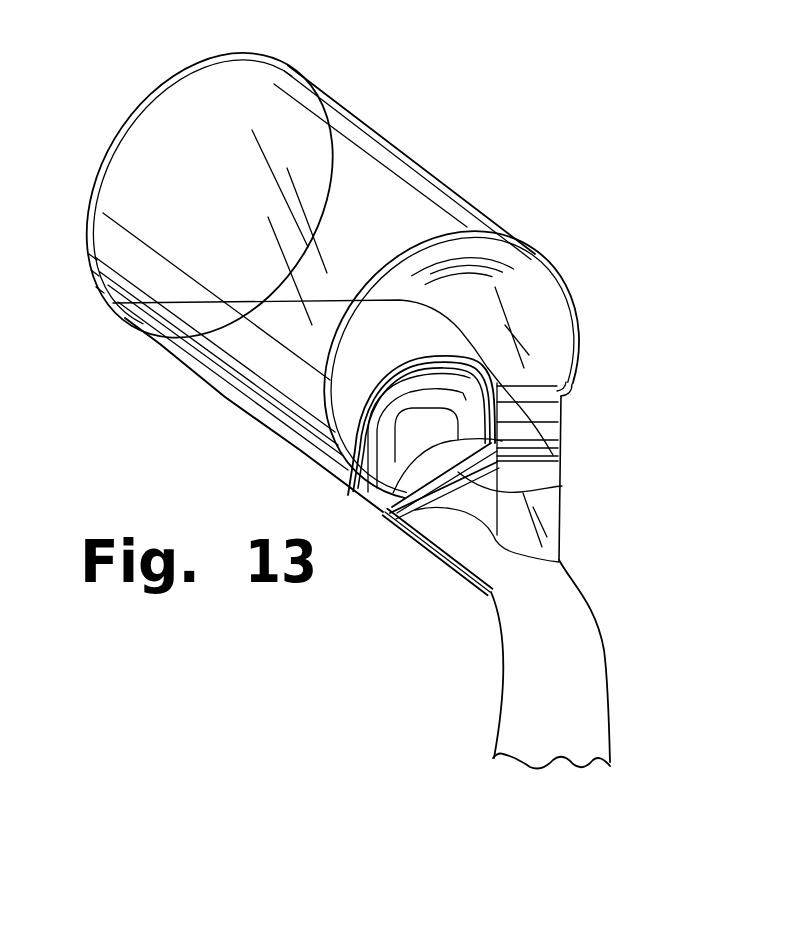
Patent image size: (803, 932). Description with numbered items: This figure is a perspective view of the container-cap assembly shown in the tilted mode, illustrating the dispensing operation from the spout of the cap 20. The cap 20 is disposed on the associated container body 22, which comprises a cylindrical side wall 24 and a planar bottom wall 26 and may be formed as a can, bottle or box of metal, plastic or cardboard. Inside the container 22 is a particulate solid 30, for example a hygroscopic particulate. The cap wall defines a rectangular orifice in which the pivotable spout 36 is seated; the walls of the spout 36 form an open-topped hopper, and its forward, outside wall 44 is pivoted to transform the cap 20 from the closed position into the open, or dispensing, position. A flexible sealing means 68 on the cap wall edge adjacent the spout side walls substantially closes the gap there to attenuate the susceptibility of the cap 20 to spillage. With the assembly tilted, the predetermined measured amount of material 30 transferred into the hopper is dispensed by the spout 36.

The cap 20 is at (595, 284).
The container body 22 is at (118, 362).
The cylindrical side wall 24 is at (413, 164).
The planar bottom wall 26 is at (160, 193).
The particulate solid 30 is at (577, 709).
The spout 36 is at (584, 523).
The forward outside wall 44 is at (455, 570).
The flexible sealing means 68 is at (562, 486).